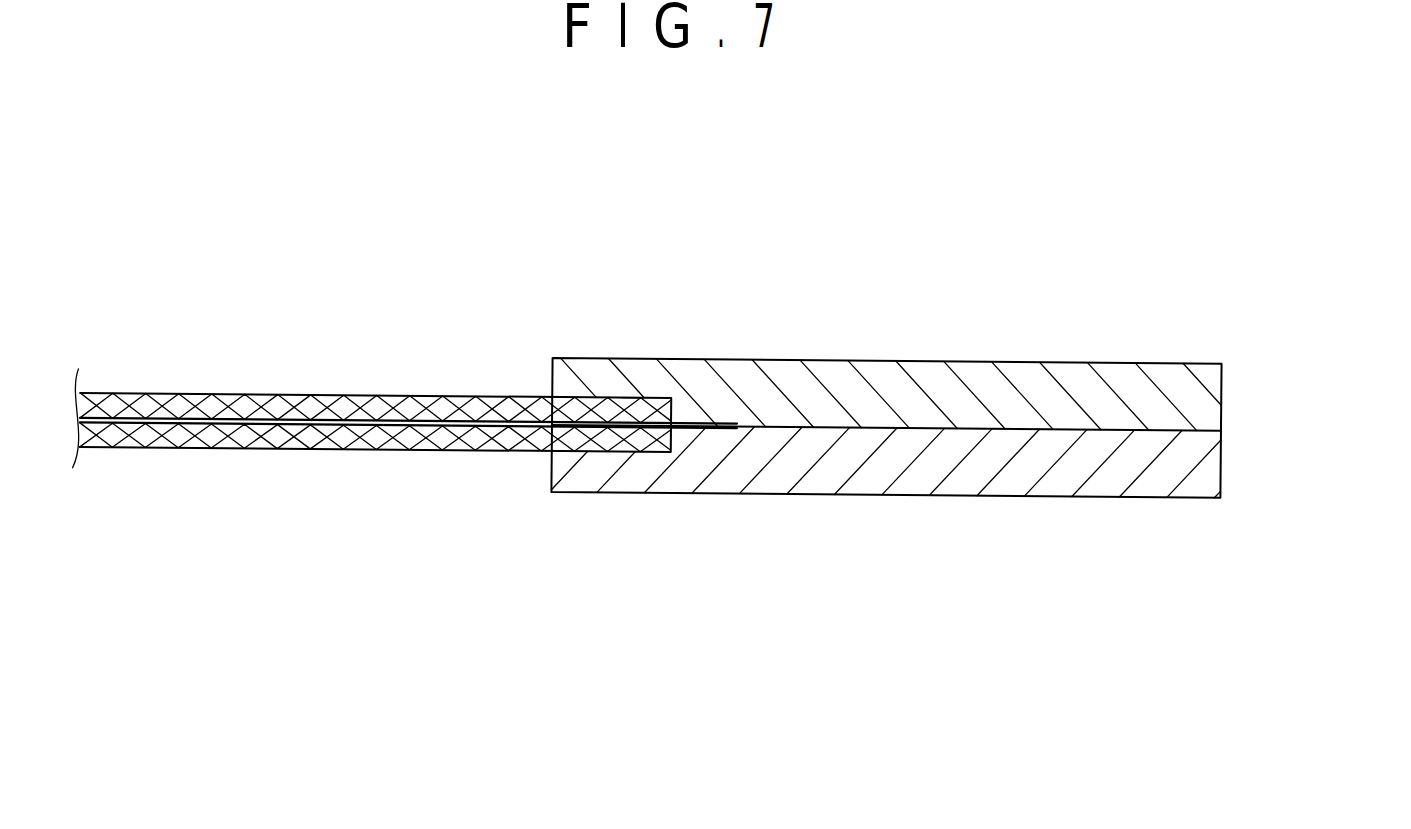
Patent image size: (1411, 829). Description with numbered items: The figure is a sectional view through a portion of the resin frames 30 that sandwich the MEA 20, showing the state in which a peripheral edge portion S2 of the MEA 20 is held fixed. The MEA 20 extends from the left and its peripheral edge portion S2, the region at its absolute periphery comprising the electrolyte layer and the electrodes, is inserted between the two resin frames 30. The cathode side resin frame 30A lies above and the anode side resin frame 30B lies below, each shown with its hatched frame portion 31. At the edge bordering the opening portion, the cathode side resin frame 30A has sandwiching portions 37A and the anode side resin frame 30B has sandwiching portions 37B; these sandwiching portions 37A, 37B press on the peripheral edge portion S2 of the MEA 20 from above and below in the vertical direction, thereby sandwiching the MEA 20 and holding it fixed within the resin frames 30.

The MEA 20 is at (231, 390).
The resin frames 30 is at (972, 427).
The cathode side resin frame 30A is at (948, 328).
The anode side resin frame 30B is at (946, 527).
The frame portion 31 is at (933, 375).
The sandwiching portions of the cathode side resin frame 37A is at (601, 371).
The sandwiching portions of the anode side resin frame 37B is at (593, 475).
The peripheral edge portion S2 is at (628, 396).